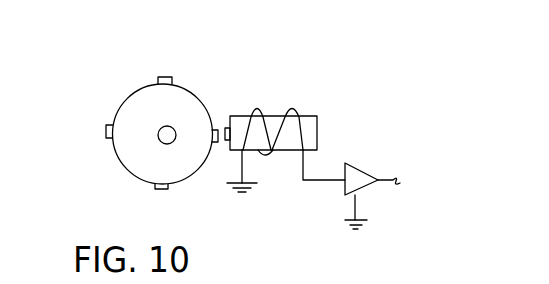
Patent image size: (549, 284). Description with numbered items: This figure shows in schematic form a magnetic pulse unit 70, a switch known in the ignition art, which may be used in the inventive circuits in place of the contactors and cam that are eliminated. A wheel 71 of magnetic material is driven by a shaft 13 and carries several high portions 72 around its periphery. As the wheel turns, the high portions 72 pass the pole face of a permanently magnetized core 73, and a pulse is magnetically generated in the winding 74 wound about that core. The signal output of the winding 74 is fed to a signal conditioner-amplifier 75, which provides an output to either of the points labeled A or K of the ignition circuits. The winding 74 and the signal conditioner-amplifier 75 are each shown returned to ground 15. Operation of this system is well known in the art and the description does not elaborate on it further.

The magnetic pulse unit 70 is at (240, 61).
The wheel 71 is at (169, 117).
The high portions 72 is at (164, 77).
The shaft 13 is at (158, 136).
The permanently magnetized core 73 is at (310, 127).
The winding 74 is at (253, 110).
The ground 15 is at (251, 183).
The signal conditioner-amplifier 75 is at (362, 170).